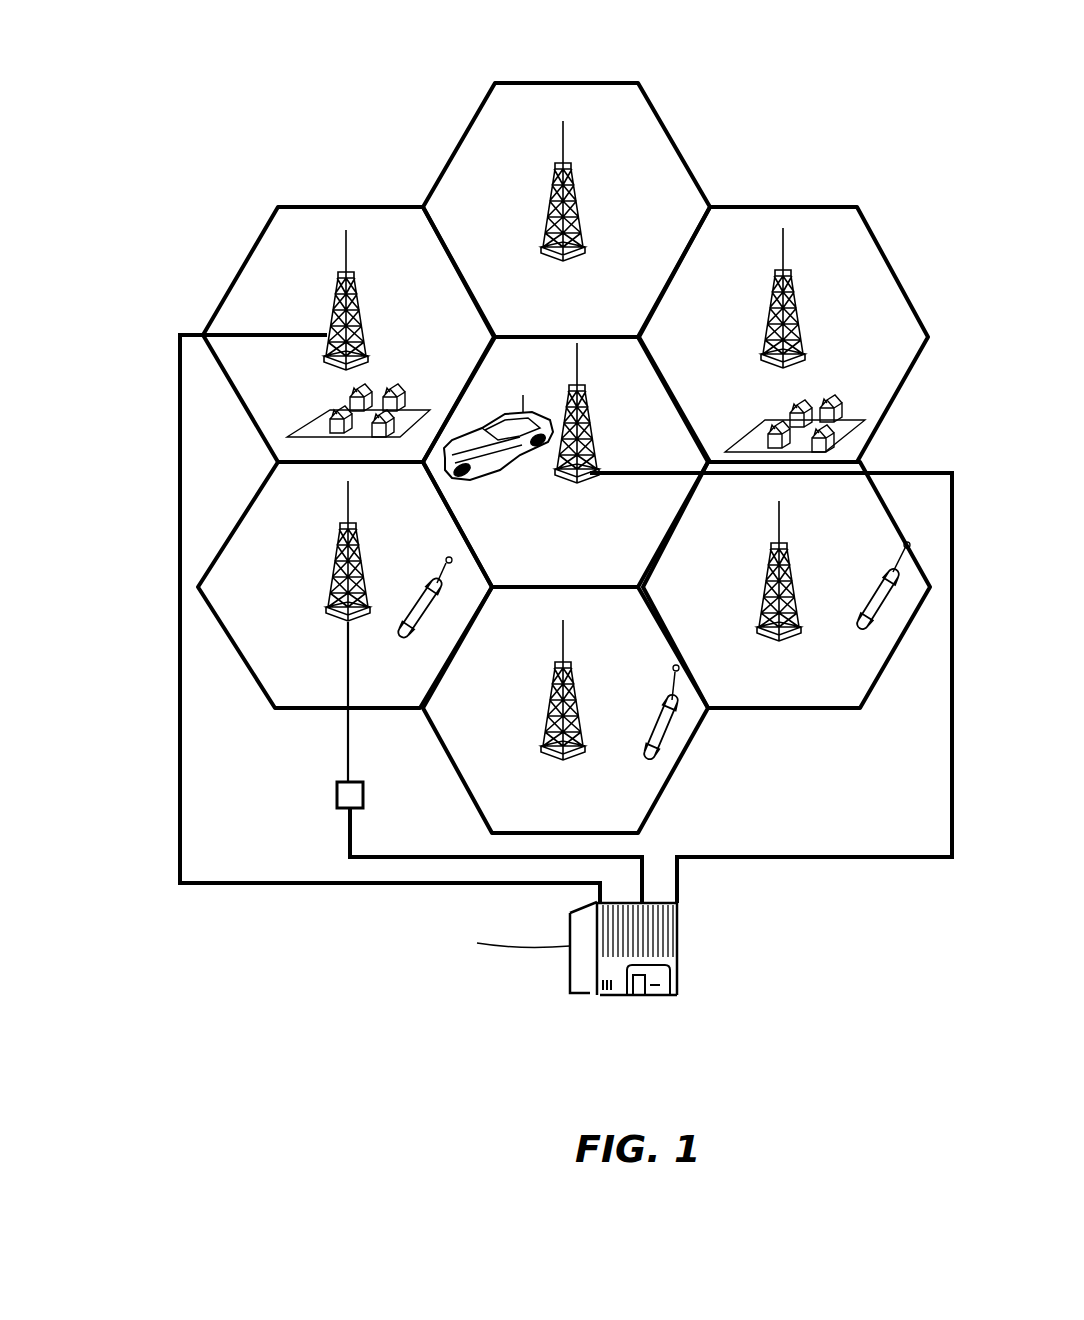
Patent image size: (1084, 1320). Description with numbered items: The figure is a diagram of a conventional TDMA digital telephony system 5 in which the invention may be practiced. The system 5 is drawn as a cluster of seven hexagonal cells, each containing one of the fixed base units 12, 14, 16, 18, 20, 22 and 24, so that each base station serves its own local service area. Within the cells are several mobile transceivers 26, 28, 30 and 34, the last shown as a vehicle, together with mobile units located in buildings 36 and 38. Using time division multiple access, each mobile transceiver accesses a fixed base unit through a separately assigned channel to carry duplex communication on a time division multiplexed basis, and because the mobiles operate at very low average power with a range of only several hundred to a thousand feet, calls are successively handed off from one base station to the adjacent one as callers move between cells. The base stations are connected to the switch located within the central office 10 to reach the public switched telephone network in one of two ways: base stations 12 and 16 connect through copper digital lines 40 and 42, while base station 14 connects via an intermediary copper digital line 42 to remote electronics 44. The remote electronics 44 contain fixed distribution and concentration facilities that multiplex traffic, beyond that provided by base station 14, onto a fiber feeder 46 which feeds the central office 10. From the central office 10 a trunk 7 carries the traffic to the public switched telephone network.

The TDMA digital telephony system 5 is at (724, 134).
The trunk 7 is at (510, 943).
The central office 10 is at (680, 953).
The fixed base unit 12 is at (365, 293).
The fixed base unit 14 is at (363, 551).
The fixed base unit 16 is at (590, 417).
The fixed base unit 18 is at (580, 185).
The fixed base unit 20 is at (575, 672).
The fixed base unit 22 is at (800, 291).
The fixed base unit 24 is at (795, 563).
The mobile transceiver 26 is at (433, 605).
The mobile transceiver 28 is at (658, 713).
The mobile transceiver 30 is at (875, 597).
The mobile transceiver 34 is at (503, 425).
The building 36 is at (405, 388).
The building 38 is at (838, 400).
The copper digital line 40 is at (178, 778).
The copper digital line 42 is at (345, 735).
The remote electronics 44 is at (333, 797).
The fiber feeder 46 is at (345, 842).